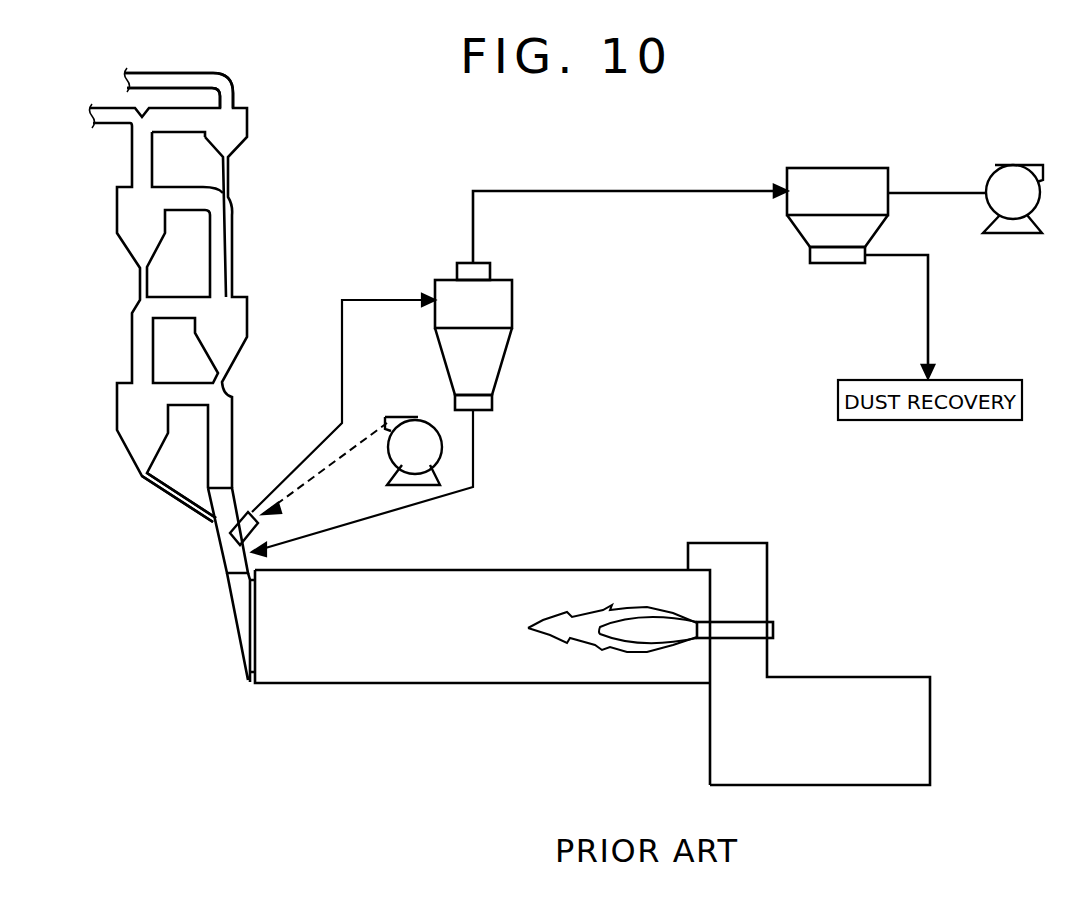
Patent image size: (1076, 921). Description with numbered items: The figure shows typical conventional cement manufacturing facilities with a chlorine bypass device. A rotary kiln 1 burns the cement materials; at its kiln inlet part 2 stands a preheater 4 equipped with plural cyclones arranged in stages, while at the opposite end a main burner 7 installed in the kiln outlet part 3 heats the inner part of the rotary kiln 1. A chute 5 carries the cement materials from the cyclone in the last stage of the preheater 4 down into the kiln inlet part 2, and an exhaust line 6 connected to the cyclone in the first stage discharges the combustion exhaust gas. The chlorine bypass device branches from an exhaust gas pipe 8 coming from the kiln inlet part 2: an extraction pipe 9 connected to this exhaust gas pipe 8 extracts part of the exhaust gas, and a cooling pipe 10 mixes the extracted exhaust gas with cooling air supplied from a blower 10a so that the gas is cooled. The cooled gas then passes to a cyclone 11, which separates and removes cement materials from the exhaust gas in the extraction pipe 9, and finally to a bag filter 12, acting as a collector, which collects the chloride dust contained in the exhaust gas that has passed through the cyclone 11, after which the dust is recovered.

The rotary kiln 1 is at (567, 570).
The kiln inlet part 2 is at (253, 647).
The kiln outlet part 3 is at (758, 595).
The preheater 4 is at (123, 298).
The chute 5 is at (180, 507).
The exhaust line 6 is at (192, 80).
The main burner 7 is at (750, 638).
The exhaust gas pipe 8 is at (227, 550).
The extraction pipe 9 is at (249, 512).
The cooling pipe 10 is at (257, 528).
The blower 10a is at (410, 428).
The cyclone 11 is at (512, 300).
The bag filter 12 is at (852, 172).